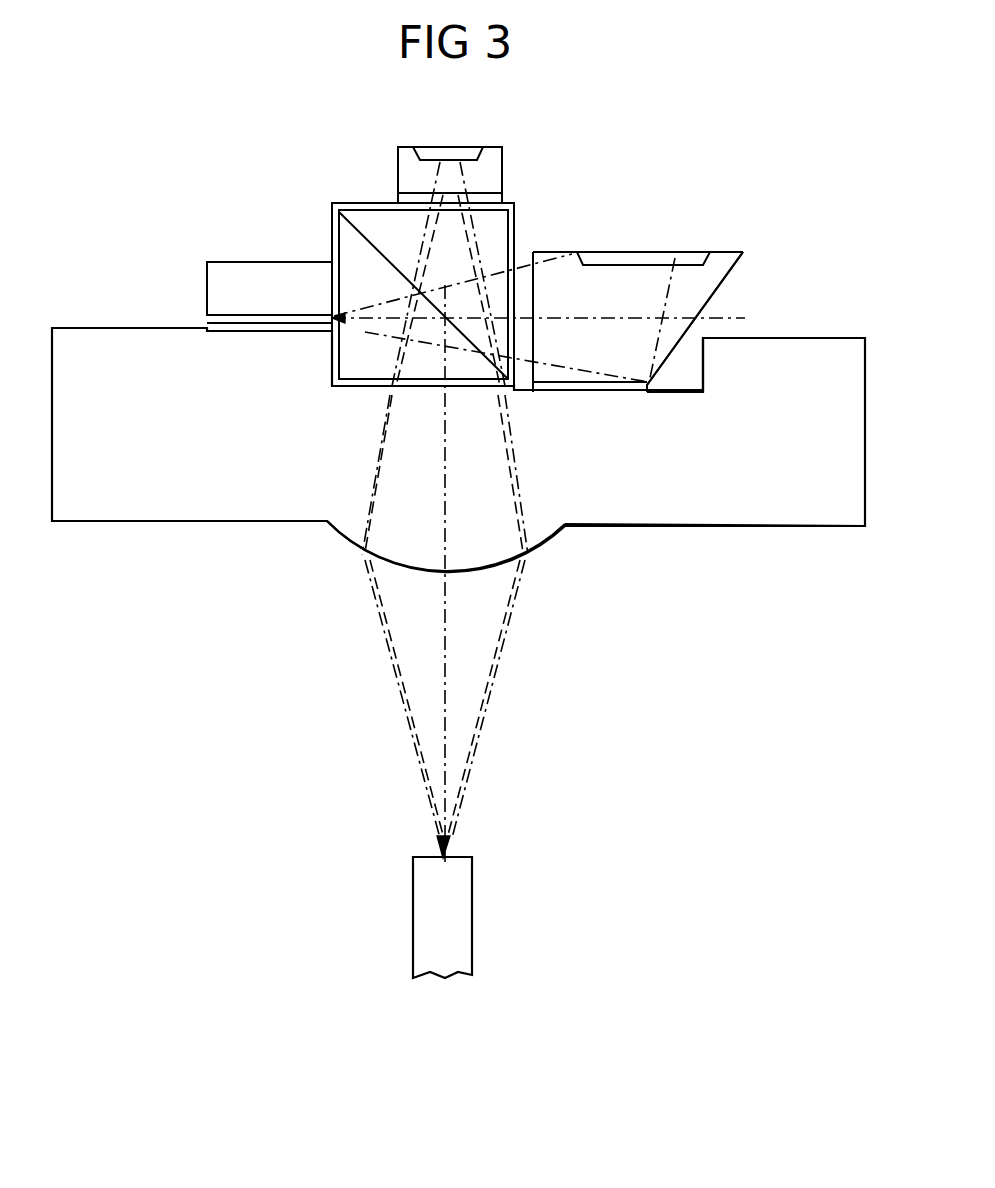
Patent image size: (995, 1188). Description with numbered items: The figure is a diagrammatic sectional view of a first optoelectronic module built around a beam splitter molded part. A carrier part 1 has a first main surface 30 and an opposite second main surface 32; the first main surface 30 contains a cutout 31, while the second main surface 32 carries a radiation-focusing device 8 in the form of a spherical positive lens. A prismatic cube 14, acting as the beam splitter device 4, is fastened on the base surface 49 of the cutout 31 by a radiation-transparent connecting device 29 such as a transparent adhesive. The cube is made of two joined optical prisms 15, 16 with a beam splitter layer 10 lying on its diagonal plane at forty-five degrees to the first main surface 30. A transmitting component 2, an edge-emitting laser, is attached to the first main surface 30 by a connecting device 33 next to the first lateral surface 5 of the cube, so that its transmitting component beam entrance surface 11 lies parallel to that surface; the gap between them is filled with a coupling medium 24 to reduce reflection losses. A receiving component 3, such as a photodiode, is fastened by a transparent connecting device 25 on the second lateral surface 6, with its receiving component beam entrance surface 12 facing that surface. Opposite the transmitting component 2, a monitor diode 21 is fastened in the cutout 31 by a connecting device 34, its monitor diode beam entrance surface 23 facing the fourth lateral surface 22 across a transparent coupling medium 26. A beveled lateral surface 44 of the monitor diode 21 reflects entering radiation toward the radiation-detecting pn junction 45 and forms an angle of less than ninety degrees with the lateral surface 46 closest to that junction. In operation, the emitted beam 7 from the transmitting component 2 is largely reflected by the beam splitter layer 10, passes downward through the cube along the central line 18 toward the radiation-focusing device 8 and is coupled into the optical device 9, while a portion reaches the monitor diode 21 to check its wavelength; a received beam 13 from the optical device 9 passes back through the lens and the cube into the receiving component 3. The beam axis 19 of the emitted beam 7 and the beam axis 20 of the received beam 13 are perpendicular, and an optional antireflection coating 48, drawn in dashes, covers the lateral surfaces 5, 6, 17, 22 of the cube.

The carrier part 1 is at (773, 527).
The transmitting component 2 is at (223, 268).
The receiving component 3 is at (487, 147).
The beam splitter device 4 is at (407, 229).
The prismatic cube 14 is at (423, 294).
The first lateral surface 5 is at (332, 215).
The second lateral surface 6 is at (381, 205).
The emitted beam 7 is at (385, 334).
The radiation-focusing device 8 is at (417, 572).
The optical device 9 is at (462, 917).
The beam splitter layer 10 is at (423, 258).
The transmitting component beam entrance surface 11 is at (328, 305).
The receiving component beam entrance surface 12 is at (494, 195).
The received beam 13 is at (524, 503).
The optical prism 15 is at (522, 208).
The optical prism 16 is at (340, 205).
The lateral surface 17 is at (467, 392).
The optical axis 18 is at (443, 392).
The beam axis of the emitted beam 19 is at (728, 315).
The beam axis of the received beam 20 is at (447, 712).
The monitor diode 21 is at (730, 258).
The fourth lateral surface 22 is at (517, 235).
The monitor diode beam entrance surface 23 is at (538, 285).
The coupling medium 24 is at (332, 262).
The connecting device 25 is at (400, 205).
The coupling medium 26 is at (540, 393).
The connecting device 29 is at (328, 383).
The first main surface 30 is at (85, 328).
The cutout 31 is at (690, 370).
The second main surface 32 is at (676, 528).
The connecting device 33 is at (205, 328).
The connecting device 34 is at (637, 395).
The lateral surface 44 is at (748, 270).
The pn junction 45 is at (648, 252).
The lateral surface 46 is at (695, 252).
The antireflection coating 48 is at (372, 392).
The base surface 49 is at (690, 395).